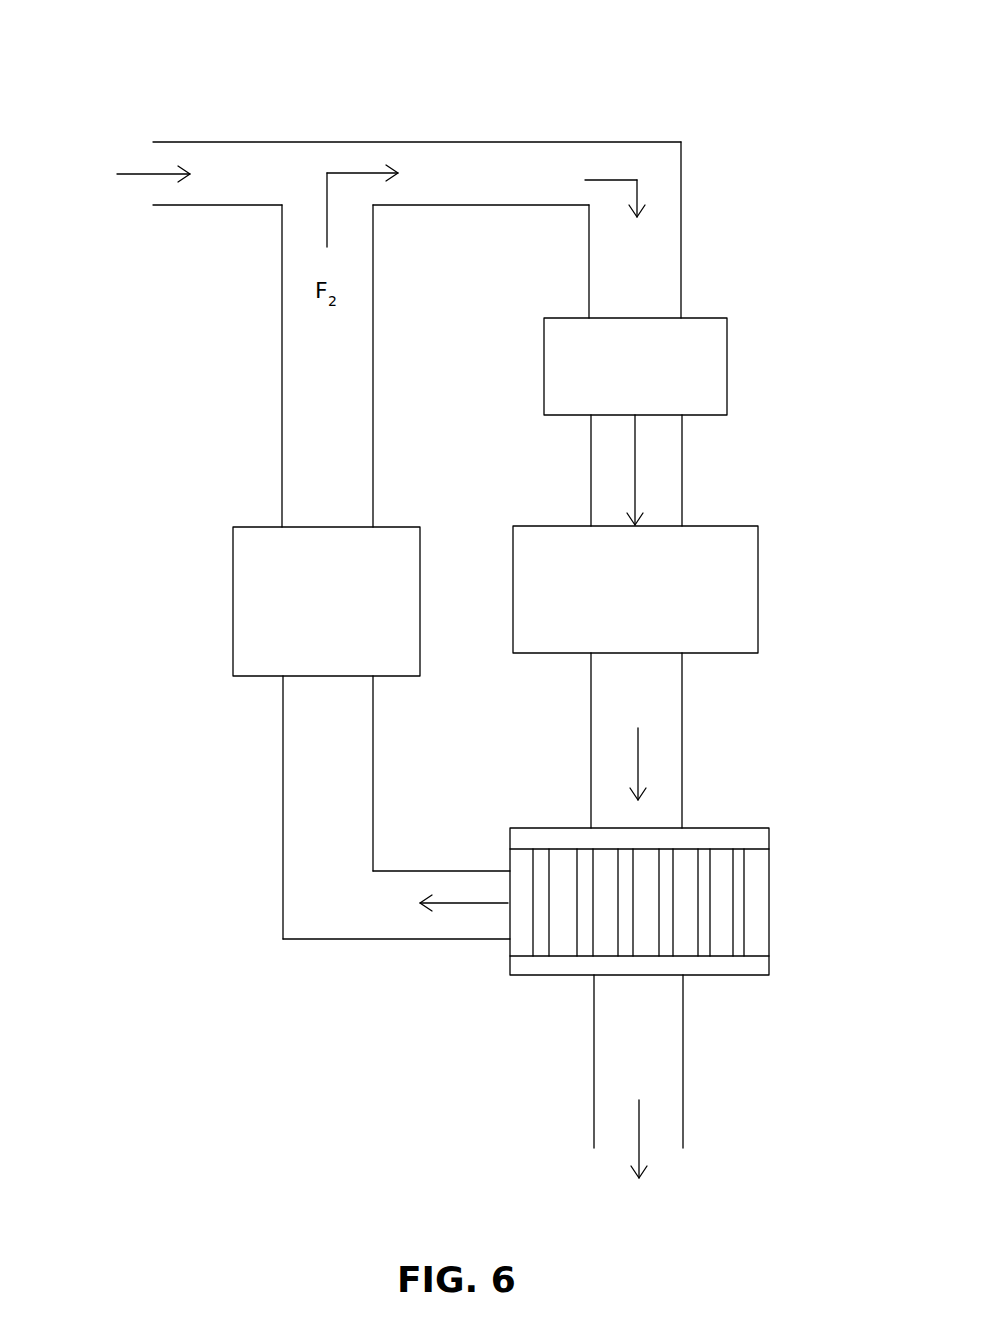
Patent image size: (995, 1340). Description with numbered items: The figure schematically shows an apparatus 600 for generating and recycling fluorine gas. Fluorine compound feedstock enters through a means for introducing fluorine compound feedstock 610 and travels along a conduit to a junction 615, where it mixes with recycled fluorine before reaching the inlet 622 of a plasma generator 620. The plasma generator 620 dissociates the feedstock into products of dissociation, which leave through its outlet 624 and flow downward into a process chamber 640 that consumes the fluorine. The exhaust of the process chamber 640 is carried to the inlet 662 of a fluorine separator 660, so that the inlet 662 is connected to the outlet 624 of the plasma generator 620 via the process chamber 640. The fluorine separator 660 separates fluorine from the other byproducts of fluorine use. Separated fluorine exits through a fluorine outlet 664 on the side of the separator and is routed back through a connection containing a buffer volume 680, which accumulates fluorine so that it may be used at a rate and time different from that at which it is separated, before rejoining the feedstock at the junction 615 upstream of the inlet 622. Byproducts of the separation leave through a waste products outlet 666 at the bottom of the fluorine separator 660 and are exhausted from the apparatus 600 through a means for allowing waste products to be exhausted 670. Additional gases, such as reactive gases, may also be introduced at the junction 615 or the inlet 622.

The apparatus 600 is at (365, 73).
The means for introducing fluorine compound feedstock 610 is at (176, 183).
The junction 615 is at (481, 290).
The plasma generator 620 is at (671, 359).
The inlet 622 is at (666, 249).
The outlet 624 is at (602, 470).
The process chamber 640 is at (675, 589).
The fluorine separator 660 is at (680, 901).
The inlet 662 is at (677, 740).
The fluorine outlet 664 is at (396, 807).
The waste products outlet 666 is at (594, 1061).
The means for allowing waste products to be exhausted 670 is at (645, 1158).
The buffer volume 680 is at (291, 597).